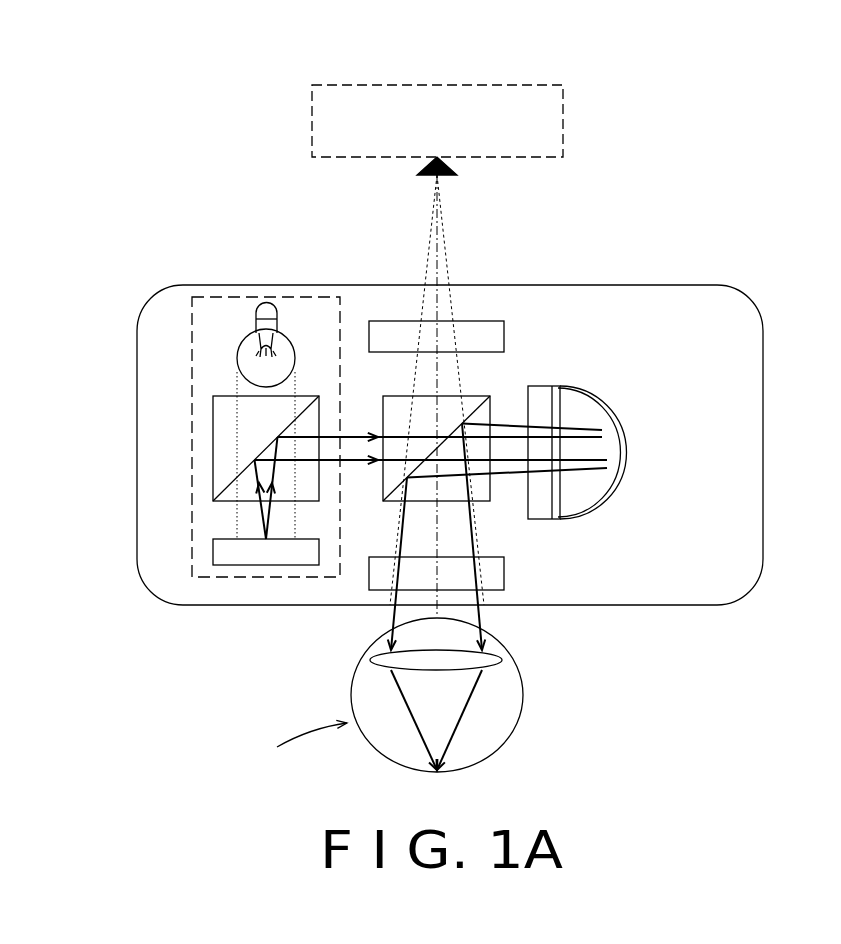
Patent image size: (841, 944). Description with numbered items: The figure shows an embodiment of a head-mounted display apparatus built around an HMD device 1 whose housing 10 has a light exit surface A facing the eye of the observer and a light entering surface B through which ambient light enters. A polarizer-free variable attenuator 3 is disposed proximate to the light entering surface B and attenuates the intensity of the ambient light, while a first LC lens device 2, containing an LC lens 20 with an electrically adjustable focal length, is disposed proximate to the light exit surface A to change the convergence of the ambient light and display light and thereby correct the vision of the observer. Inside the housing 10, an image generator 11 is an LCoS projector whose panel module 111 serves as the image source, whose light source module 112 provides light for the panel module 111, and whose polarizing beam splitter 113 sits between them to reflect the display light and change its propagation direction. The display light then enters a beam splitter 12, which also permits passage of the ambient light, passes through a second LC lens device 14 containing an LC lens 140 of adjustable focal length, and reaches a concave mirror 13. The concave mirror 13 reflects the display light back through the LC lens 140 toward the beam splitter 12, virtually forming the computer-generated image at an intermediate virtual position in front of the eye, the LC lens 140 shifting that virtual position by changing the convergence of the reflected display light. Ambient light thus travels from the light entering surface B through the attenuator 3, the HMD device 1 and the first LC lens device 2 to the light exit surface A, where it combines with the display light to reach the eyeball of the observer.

The HMD device 1 is at (429, 434).
The first LC lens device 2 is at (450, 500).
The LC lens 20 is at (350, 588).
The polarizer-free variable attenuator 3 is at (505, 336).
The housing 10 is at (190, 421).
The image generator 11 is at (193, 400).
The panel module 111 is at (213, 553).
The light source module 112 is at (243, 343).
The polarizing beam splitter 113 is at (228, 470).
The beam splitter 12 is at (490, 396).
The concave mirror 13 is at (610, 452).
The second LC lens device 14 is at (615, 532).
The LC lens 140 is at (542, 509).
The light exit surface A is at (500, 605).
The light entering surface B is at (468, 283).